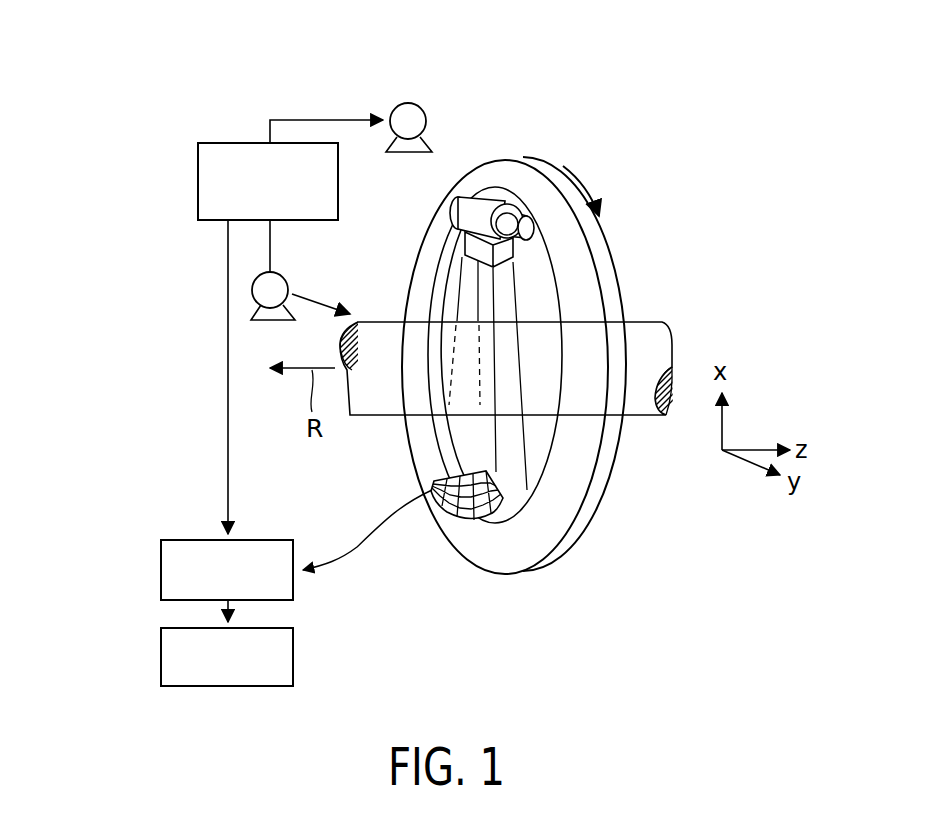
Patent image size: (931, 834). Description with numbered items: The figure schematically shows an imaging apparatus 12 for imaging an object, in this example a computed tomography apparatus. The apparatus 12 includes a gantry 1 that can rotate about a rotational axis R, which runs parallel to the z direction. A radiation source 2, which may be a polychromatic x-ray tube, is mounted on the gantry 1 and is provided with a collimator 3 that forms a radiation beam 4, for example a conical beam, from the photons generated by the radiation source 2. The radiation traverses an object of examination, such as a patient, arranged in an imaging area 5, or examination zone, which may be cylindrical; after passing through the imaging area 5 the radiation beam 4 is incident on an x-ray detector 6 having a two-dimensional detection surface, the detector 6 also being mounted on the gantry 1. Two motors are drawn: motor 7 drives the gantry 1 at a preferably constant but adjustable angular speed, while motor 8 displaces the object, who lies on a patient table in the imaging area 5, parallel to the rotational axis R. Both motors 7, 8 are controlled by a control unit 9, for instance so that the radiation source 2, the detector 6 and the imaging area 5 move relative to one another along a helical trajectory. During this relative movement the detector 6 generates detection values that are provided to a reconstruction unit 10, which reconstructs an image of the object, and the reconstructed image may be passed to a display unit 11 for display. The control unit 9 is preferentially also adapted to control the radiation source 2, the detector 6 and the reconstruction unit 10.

The gantry 1 is at (563, 505).
The radiation source 2 is at (477, 203).
The collimator 3 is at (505, 255).
The radiation beam 4 is at (497, 458).
The imaging area 5 is at (385, 321).
The x-ray detector 6 is at (463, 527).
The motor 7 is at (409, 103).
The motor 8 is at (288, 284).
The control unit 9 is at (213, 143).
The reconstruction unit 10 is at (161, 572).
The display unit 11 is at (161, 657).
The imaging apparatus 12 is at (529, 368).